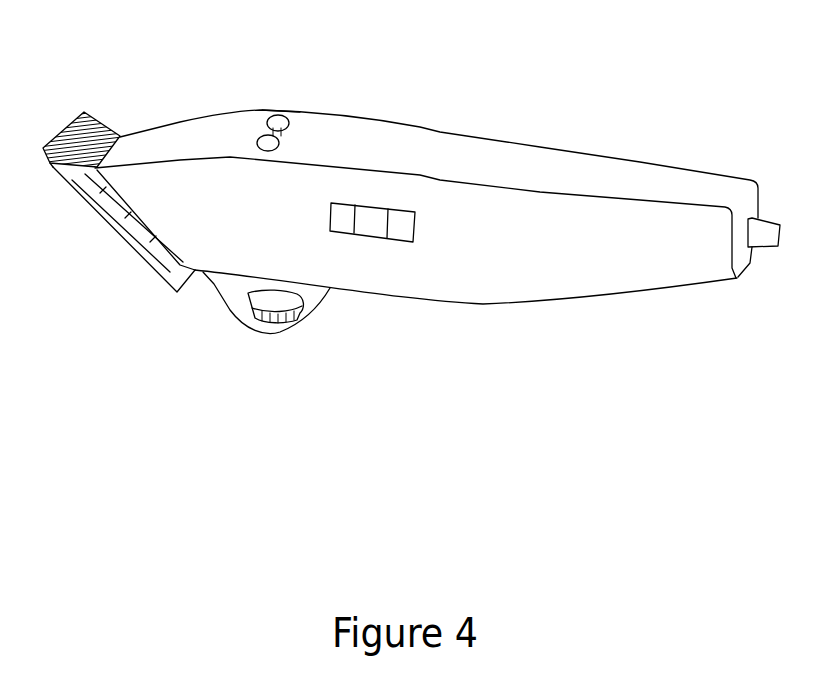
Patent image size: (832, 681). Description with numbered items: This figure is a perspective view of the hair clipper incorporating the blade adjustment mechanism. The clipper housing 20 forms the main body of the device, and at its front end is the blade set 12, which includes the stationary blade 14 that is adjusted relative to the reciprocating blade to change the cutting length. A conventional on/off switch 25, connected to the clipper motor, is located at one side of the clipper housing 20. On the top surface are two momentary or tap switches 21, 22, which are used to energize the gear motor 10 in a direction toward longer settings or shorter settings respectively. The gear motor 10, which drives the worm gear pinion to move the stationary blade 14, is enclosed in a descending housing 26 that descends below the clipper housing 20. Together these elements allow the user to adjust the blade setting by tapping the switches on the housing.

The gear motor 10 is at (277, 322).
The blade set 12 is at (108, 133).
The stationary blade 14 is at (96, 224).
The clipper housing 20 is at (543, 142).
The momentary switch 21 is at (290, 133).
The momentary switch 22 is at (273, 110).
The on/off switch 25 is at (400, 242).
The descending housing 26 is at (232, 310).